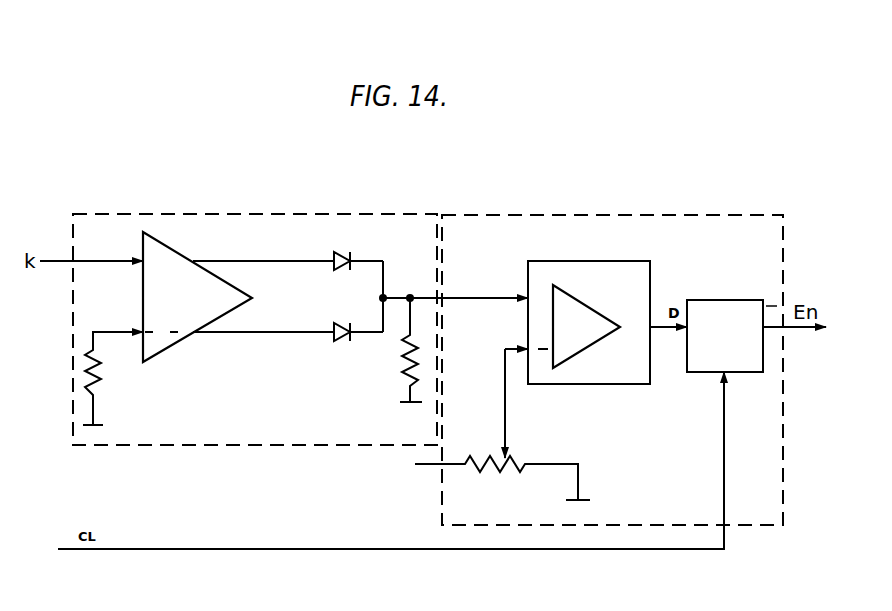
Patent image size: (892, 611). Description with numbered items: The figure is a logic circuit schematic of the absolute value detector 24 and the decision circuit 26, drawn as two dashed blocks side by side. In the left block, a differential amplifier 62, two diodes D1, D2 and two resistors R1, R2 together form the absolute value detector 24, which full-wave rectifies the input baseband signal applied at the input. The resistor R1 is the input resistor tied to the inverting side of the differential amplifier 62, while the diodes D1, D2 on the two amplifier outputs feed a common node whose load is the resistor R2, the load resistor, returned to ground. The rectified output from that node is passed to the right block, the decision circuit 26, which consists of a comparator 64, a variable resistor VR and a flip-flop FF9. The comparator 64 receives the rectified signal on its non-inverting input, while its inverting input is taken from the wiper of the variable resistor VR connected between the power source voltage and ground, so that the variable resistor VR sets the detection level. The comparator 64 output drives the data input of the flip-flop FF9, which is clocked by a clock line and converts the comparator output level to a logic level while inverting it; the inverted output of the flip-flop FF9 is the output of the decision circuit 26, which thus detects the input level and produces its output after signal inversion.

The absolute value detector 24 is at (348, 213).
The decision circuit 26 is at (642, 218).
The differential amplifier 62 is at (260, 257).
The comparator 64 is at (650, 282).
The diode D1 is at (343, 253).
The diode D2 is at (343, 322).
The input resistor R1 is at (100, 385).
The load resistor R2 is at (405, 362).
The variable resistor VR is at (503, 466).
The flip-flop FF9 is at (732, 348).